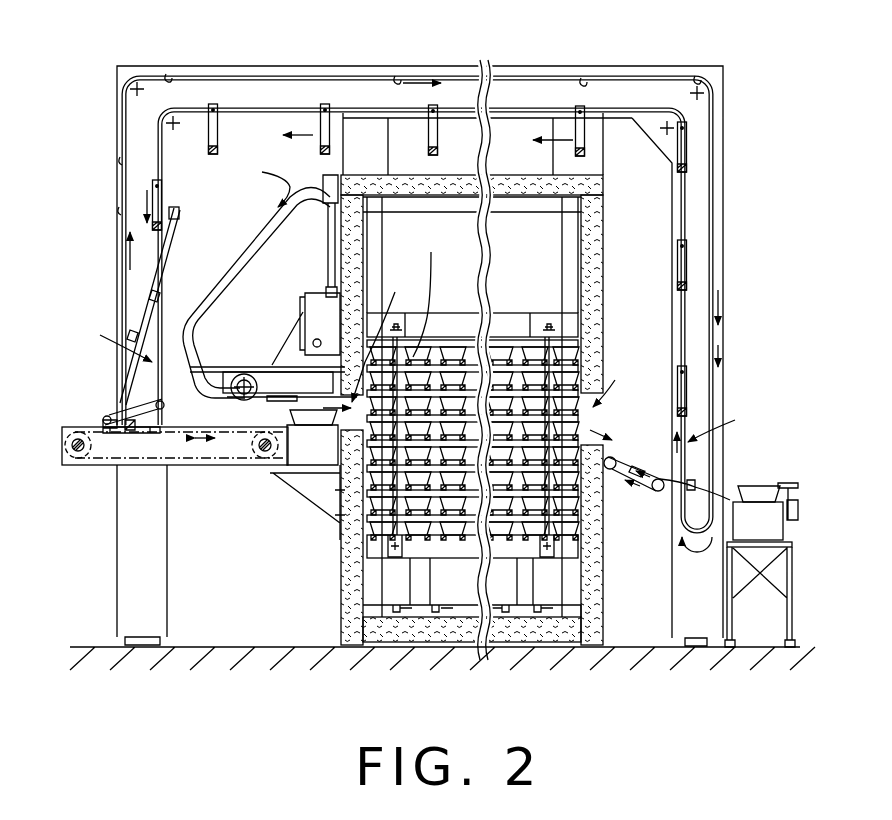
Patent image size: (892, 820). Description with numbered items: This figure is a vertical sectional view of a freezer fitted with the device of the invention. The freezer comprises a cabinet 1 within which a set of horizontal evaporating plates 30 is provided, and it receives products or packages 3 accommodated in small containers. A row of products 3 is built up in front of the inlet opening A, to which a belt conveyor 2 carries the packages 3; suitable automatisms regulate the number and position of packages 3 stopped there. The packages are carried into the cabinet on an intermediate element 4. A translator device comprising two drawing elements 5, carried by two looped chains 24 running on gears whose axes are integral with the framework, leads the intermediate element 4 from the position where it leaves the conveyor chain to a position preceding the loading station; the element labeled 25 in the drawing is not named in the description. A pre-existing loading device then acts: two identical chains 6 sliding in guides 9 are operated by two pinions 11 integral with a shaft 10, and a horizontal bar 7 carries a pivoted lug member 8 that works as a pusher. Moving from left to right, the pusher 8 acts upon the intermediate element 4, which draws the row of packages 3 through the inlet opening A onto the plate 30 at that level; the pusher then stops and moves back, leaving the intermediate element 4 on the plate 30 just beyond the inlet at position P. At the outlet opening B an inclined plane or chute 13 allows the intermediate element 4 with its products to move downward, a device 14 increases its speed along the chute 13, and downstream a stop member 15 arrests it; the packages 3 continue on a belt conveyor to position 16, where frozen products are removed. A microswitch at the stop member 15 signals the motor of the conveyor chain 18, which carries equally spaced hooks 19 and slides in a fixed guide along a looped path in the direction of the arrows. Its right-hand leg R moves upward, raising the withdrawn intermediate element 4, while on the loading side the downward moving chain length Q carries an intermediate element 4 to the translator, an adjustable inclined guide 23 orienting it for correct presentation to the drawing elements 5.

The cabinet 1 is at (510, 188).
The belt conveyor 2 is at (300, 440).
The products or packages 3 is at (443, 352).
The intermediate element 4 is at (215, 137).
The drawing element 5 is at (103, 423).
The chain 6 is at (178, 440).
The horizontal bar 7 is at (267, 393).
The lug member 8 is at (258, 428).
The guide 9 is at (256, 278).
The shaft 10 is at (245, 373).
The pinion 11 is at (243, 373).
The inclined plane 13 is at (610, 457).
The device 14 is at (610, 475).
The stop member 15 is at (693, 477).
The position 16 is at (755, 560).
The chain 18 is at (298, 107).
The hook 19 is at (122, 157).
The inclined guide 23 is at (153, 275).
The chain 24 is at (103, 458).
The drive pulley 25 is at (262, 462).
The horizontal plate 30 is at (553, 357).
The inlet opening A is at (379, 332).
The outlet opening B is at (611, 395).
The position P is at (427, 290).
The chain length Q is at (112, 338).
The chain length R is at (720, 418).